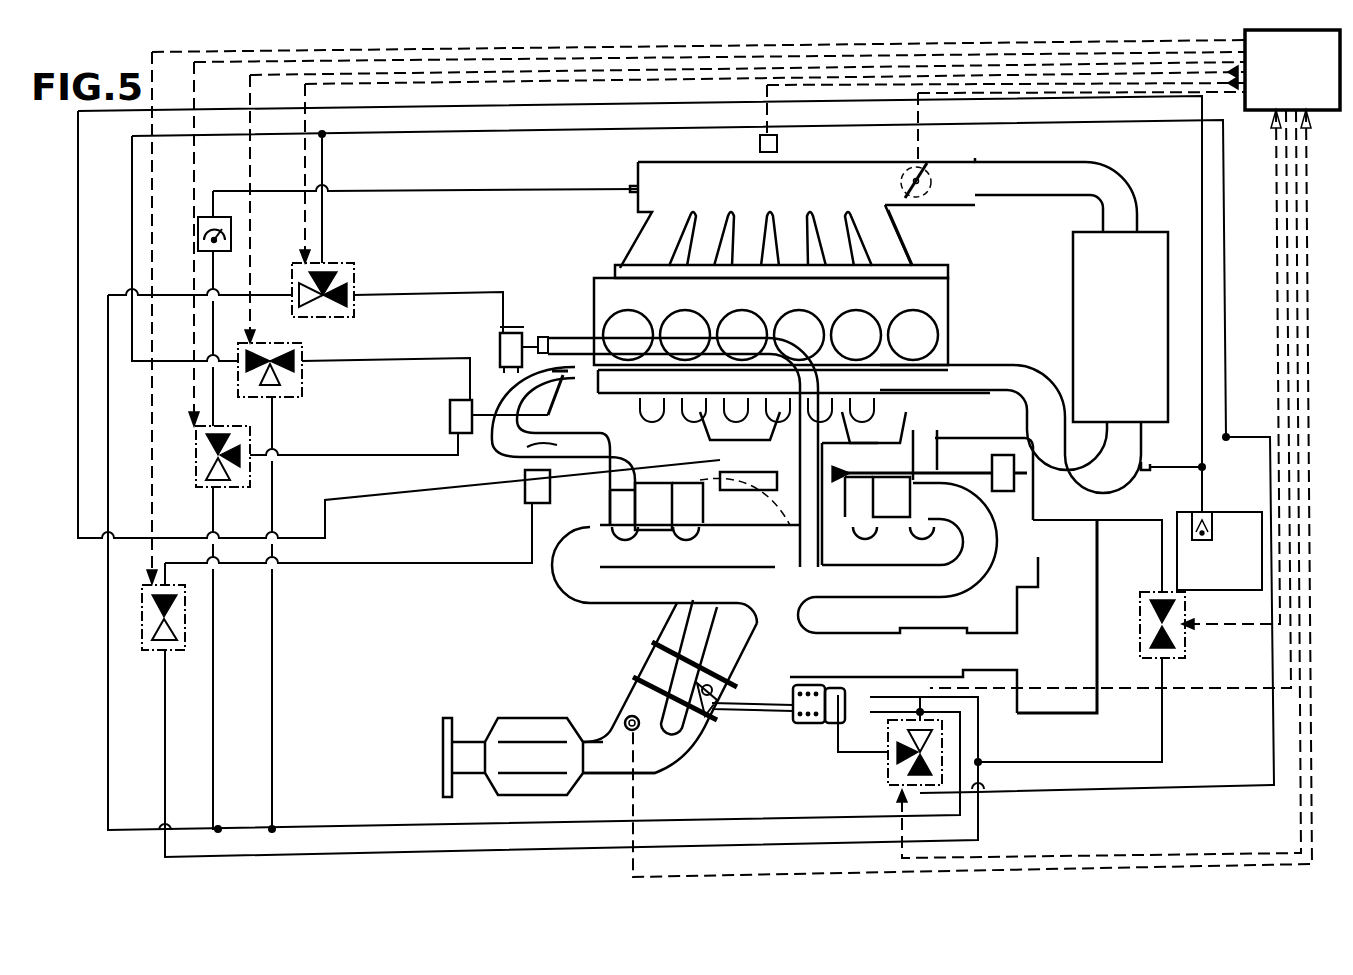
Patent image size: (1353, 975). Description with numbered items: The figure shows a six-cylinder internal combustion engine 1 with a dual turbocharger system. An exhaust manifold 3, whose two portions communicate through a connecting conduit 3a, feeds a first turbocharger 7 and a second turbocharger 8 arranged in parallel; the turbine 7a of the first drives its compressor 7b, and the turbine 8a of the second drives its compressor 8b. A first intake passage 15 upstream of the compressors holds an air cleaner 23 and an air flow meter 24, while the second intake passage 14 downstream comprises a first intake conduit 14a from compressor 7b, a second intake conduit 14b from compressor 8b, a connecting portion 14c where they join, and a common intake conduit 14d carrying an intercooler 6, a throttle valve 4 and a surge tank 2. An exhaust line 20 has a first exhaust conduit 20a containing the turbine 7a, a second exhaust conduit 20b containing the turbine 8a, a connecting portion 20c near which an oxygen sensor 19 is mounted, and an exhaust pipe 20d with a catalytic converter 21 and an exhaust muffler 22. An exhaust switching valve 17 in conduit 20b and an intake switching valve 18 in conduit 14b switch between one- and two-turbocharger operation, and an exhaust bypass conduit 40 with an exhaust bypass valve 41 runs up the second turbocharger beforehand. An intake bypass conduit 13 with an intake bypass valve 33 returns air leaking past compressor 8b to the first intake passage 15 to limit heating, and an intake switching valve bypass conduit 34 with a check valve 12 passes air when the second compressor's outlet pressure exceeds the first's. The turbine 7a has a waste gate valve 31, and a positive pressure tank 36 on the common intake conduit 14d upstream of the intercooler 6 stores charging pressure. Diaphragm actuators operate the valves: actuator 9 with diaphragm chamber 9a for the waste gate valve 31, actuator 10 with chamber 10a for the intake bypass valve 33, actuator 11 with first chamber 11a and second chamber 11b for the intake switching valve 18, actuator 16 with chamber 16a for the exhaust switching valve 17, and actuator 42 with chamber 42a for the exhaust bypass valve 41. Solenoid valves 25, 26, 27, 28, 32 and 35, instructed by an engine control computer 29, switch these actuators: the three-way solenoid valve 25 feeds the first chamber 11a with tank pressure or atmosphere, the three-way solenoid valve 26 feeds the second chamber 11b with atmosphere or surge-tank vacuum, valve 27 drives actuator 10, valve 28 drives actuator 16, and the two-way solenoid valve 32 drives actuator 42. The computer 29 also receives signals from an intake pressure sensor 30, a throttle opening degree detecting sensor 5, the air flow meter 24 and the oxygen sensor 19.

The internal combustion engine 1 is at (948, 300).
The surge tank 2 is at (713, 162).
The exhaust manifold 3 is at (925, 410).
The connecting conduit 3a is at (765, 398).
The throttle valve 4 is at (910, 205).
The throttle opening degree detecting sensor 5 is at (932, 160).
The intercooler 6 is at (1073, 290).
The first turbocharger 7 is at (878, 504).
The turbine 7a is at (842, 551).
The compressor 7b is at (965, 537).
The second turbocharger 8 is at (700, 525).
The turbine 8a is at (677, 617).
The compressor 8b is at (600, 550).
The actuator 9 is at (992, 473).
The diaphragm chamber 9a is at (1018, 480).
The actuator 10 is at (500, 347).
The diaphragm chamber 10a is at (500, 320).
The actuator 11 is at (450, 415).
The first chamber 11a is at (462, 440).
The second chamber 11b is at (455, 400).
The check valve 12 is at (592, 393).
The intake bypass conduit 13 is at (713, 337).
The second intake passage 14 is at (1128, 465).
The first intake conduit 14a is at (985, 378).
The second intake conduit 14b is at (527, 450).
The connecting portion 14c is at (1045, 400).
The common intake conduit 14d is at (1100, 172).
The first intake passage 15 is at (848, 655).
The actuator 16 is at (800, 723).
The diaphragm chamber 16a is at (835, 726).
The exhaust switching valve 17 is at (712, 720).
The intake switching valve 18 is at (566, 385).
The oxygen sensor 19 is at (625, 720).
The exhaust line 20 is at (695, 762).
The first exhaust conduit 20a is at (670, 623).
The second exhaust conduit 20b is at (737, 657).
The connecting portion 20c is at (650, 750).
The exhaust pipe 20d is at (470, 742).
The catalytic converter 21 is at (533, 780).
The exhaust muffler 22 is at (447, 718).
The air cleaner 23 is at (1097, 660).
The air flow meter 24 is at (948, 628).
The three-way solenoid valve 25 is at (292, 344).
The three-way solenoid valve 26 is at (200, 488).
The three-way solenoid valve 27 is at (340, 265).
The three-way solenoid valve 28 is at (888, 782).
The engine control computer 29 is at (1250, 112).
The intake pressure sensor 30 is at (778, 144).
The waste gate valve 31 is at (845, 462).
The two-way solenoid valve 32 is at (188, 640).
The intake bypass valve 33 is at (550, 338).
The intake switching valve bypass conduit 34 is at (572, 340).
The solenoid valve 35 is at (1186, 648).
The positive pressure tank 36 is at (1204, 590).
The exhaust bypass conduit 40 is at (745, 501).
The exhaust bypass valve 41 is at (720, 460).
The actuator 42 is at (525, 498).
The diaphragm chamber 42a is at (525, 490).